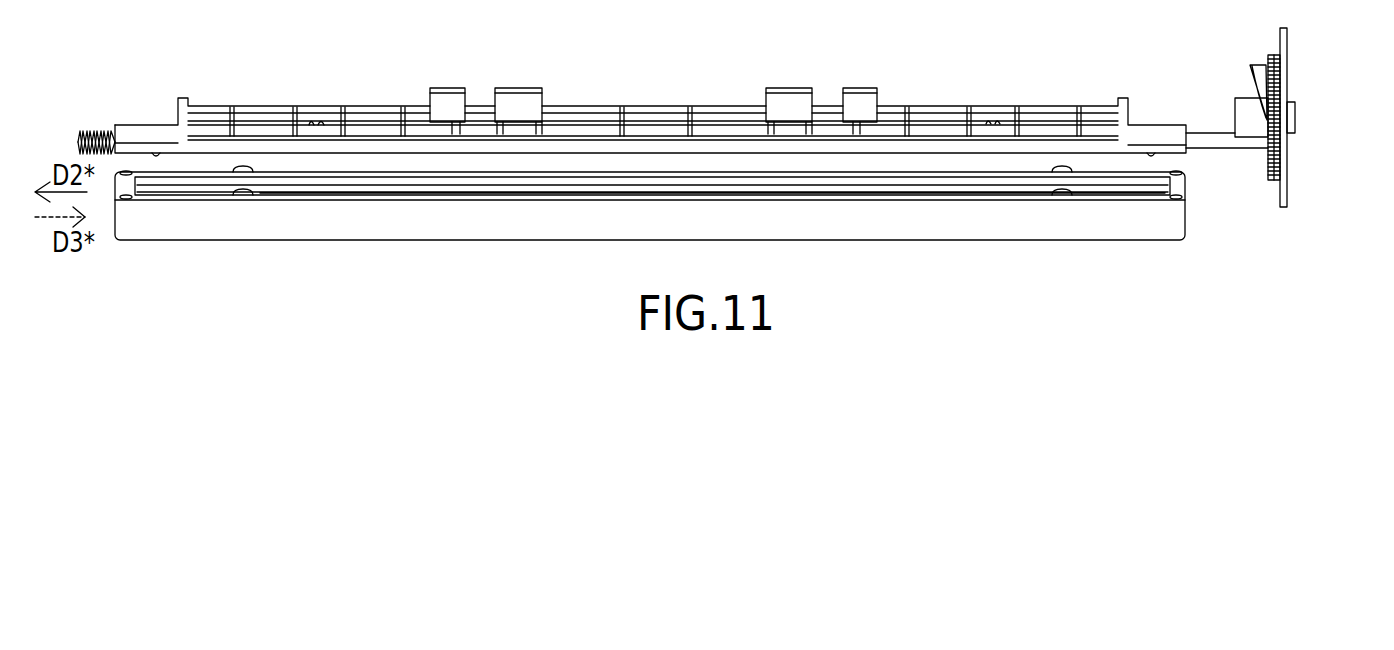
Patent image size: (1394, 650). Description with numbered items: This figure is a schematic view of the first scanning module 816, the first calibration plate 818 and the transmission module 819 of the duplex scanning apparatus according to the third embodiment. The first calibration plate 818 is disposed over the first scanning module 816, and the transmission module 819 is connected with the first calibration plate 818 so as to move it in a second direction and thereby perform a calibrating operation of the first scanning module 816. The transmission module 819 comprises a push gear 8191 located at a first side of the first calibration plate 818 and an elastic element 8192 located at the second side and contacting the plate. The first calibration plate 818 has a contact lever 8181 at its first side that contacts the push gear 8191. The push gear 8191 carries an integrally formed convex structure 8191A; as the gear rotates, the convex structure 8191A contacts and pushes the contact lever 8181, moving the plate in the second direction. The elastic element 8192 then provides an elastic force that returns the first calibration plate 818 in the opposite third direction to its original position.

The first scanning module 816 is at (985, 228).
The first calibration plate 818 is at (668, 147).
The contact lever 8181 is at (1223, 143).
The transmission module 819 is at (726, 136).
The elastic element 8192 is at (97, 132).
The push gear 8191 is at (1280, 168).
The convex structure 8191A is at (1262, 92).